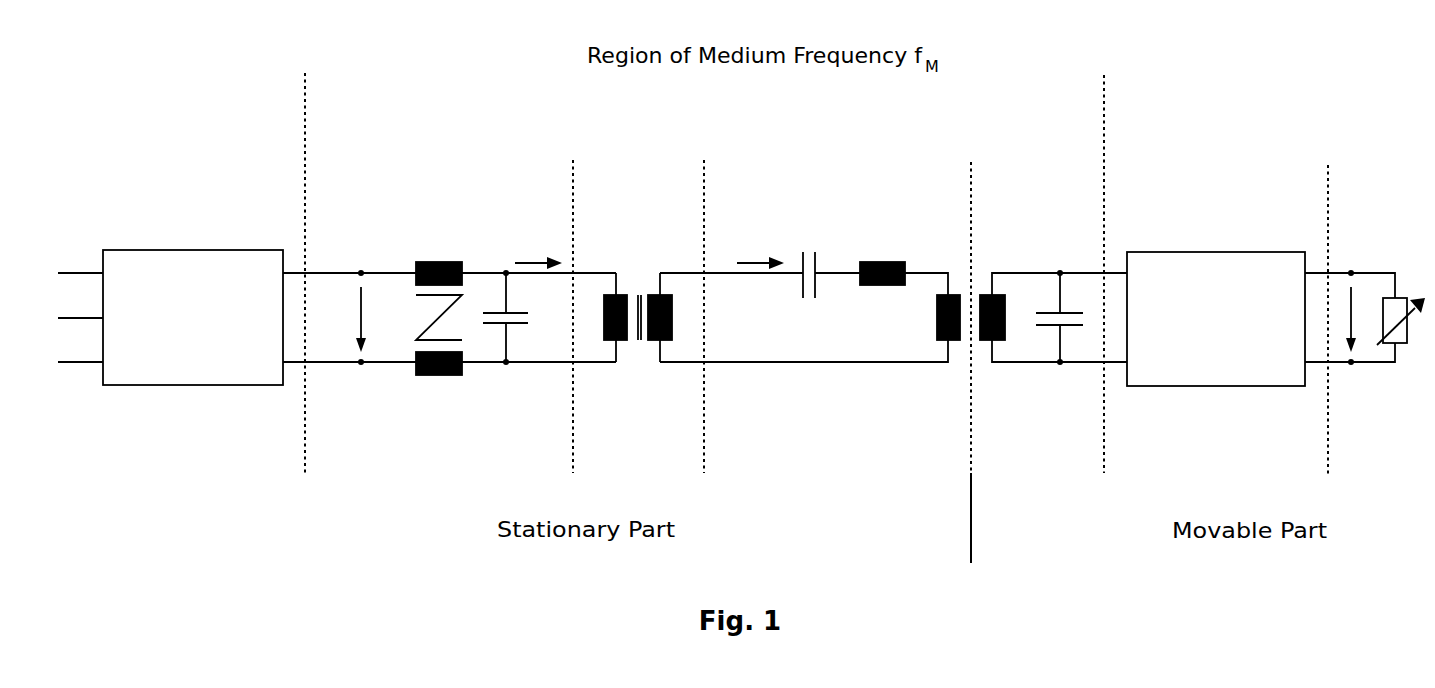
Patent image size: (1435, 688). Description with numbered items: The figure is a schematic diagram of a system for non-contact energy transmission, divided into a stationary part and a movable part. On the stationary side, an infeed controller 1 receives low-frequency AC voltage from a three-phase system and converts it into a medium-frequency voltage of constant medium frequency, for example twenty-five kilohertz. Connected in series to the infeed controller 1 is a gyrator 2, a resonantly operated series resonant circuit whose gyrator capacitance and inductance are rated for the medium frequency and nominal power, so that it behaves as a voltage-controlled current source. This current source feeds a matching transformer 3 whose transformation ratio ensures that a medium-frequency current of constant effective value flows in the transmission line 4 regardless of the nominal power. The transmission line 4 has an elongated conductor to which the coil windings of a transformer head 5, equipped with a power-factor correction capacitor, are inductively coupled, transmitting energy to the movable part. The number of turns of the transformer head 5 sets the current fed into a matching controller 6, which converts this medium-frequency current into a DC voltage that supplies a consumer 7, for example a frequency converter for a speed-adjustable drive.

The infeed controller 1 is at (209, 362).
The gyrator 2 is at (483, 358).
The matching transformer 3 is at (680, 354).
The transmission line 4 is at (849, 354).
The transformer head 5 is at (1053, 354).
The matching controller 6 is at (1239, 363).
The consumer 7 is at (1382, 358).